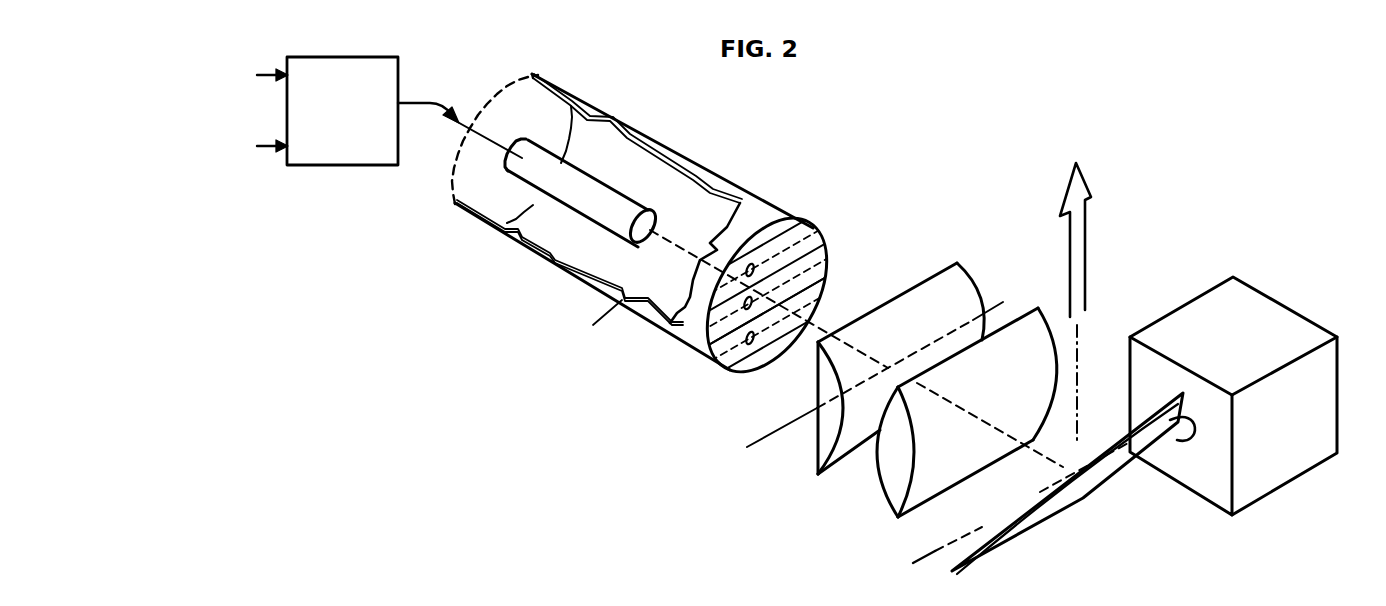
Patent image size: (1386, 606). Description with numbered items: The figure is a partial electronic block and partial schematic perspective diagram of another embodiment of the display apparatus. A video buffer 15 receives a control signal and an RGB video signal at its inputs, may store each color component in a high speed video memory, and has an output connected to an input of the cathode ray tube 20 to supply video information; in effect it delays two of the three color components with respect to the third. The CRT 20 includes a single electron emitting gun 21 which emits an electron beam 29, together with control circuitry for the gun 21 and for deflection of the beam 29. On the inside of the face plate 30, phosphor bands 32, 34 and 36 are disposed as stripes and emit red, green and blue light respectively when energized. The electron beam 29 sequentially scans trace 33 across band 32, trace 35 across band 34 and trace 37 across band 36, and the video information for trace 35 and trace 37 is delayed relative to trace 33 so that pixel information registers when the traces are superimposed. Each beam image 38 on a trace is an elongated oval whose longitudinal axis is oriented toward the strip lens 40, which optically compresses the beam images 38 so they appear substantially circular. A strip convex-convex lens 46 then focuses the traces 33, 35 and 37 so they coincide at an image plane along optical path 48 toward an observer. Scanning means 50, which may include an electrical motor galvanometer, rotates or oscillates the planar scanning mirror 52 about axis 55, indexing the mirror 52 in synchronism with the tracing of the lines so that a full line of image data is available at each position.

The video buffer 15 is at (340, 168).
The cathode ray tube 20 is at (598, 94).
The electron emitting gun 21 is at (530, 246).
The electron beam 29 is at (596, 328).
The face plate 30 is at (750, 284).
The phosphor band 32 is at (806, 212).
The trace 33 is at (812, 236).
The phosphor band 34 is at (705, 338).
The trace 35 is at (815, 264).
The phosphor band 36 is at (717, 363).
The trace 37 is at (818, 290).
The beam image 38 is at (745, 262).
The strip lens 40 is at (812, 457).
The strip convex-convex lens 46 is at (883, 500).
The optical path 48 is at (1092, 238).
The scanning means 50 is at (1190, 492).
The planar scanning mirror 52 is at (1043, 523).
The axis 55 is at (918, 565).